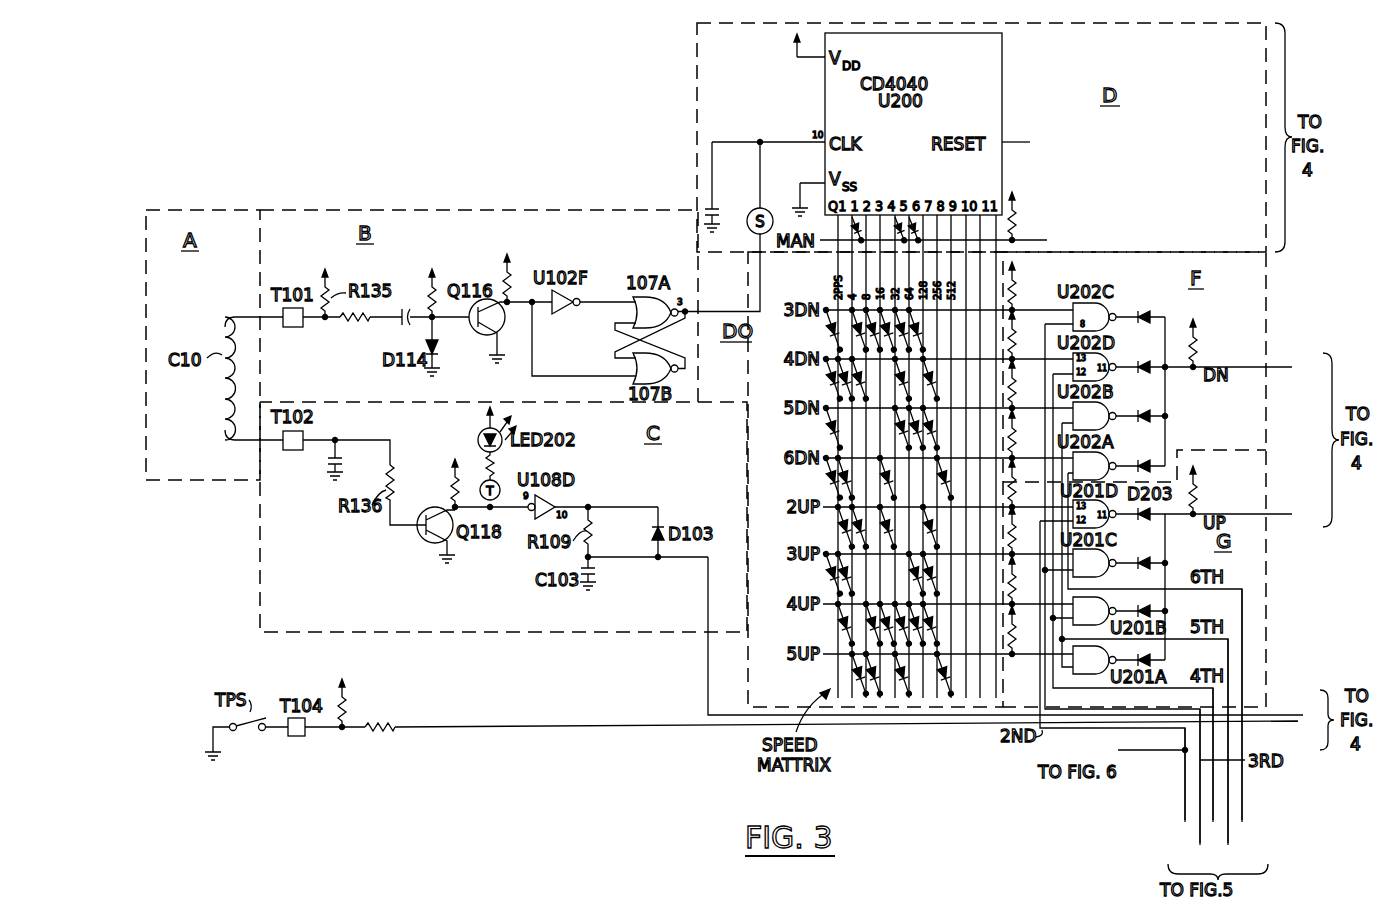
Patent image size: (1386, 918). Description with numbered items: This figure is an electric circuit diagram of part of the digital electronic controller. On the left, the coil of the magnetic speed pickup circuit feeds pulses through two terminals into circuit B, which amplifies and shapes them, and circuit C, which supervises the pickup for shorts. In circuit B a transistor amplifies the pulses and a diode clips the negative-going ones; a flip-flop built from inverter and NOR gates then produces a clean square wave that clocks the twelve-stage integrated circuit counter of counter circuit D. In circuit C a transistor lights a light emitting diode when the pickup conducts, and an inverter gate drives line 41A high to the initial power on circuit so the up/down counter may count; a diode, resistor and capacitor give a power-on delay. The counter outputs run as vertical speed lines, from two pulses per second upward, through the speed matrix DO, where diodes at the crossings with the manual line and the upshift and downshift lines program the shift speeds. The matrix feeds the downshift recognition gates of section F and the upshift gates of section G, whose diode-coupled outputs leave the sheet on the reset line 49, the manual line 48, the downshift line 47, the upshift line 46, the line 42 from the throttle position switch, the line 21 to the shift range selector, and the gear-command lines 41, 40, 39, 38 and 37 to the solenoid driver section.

The reset line 49 is at (1029, 144).
The manual speed line 48 is at (946, 241).
The downshift signal line 47 is at (1241, 367).
The upshift signal line 46 is at (1241, 514).
The line 41A is at (1291, 715).
The line to FIG. 4 42 is at (1295, 723).
The line to FIG. 6 21 is at (1074, 755).
The second gear line 41 is at (1184, 787).
The third gear line 40 is at (1200, 787).
The fourth gear line 39 is at (1215, 767).
The fifth gear line 38 is at (1232, 752).
The sixth gear line 37 is at (1250, 718).